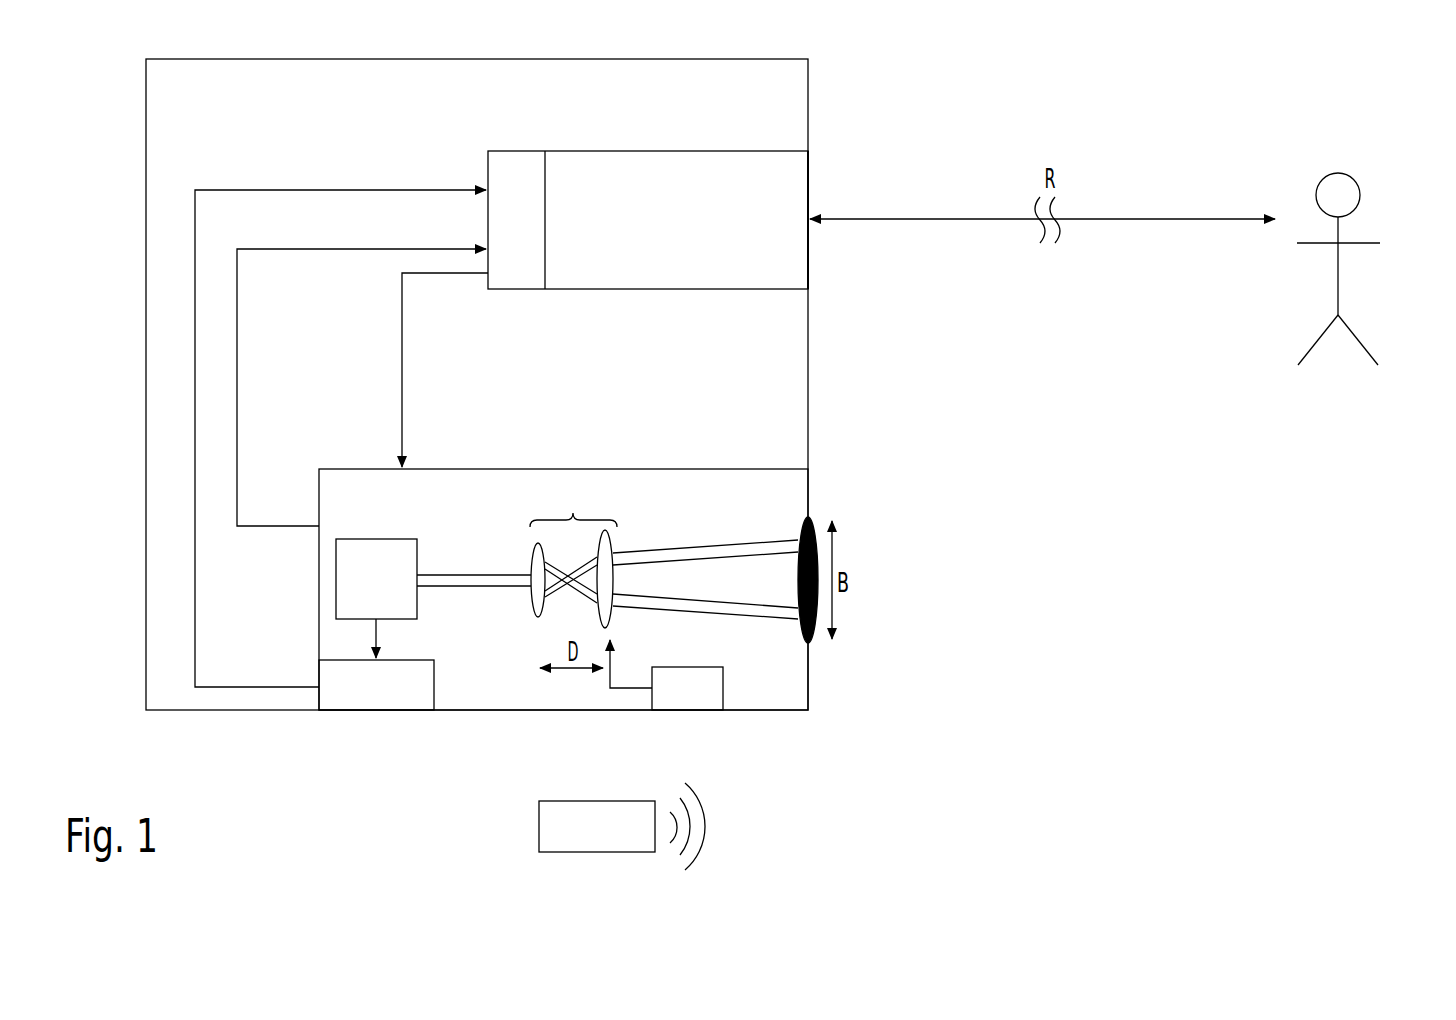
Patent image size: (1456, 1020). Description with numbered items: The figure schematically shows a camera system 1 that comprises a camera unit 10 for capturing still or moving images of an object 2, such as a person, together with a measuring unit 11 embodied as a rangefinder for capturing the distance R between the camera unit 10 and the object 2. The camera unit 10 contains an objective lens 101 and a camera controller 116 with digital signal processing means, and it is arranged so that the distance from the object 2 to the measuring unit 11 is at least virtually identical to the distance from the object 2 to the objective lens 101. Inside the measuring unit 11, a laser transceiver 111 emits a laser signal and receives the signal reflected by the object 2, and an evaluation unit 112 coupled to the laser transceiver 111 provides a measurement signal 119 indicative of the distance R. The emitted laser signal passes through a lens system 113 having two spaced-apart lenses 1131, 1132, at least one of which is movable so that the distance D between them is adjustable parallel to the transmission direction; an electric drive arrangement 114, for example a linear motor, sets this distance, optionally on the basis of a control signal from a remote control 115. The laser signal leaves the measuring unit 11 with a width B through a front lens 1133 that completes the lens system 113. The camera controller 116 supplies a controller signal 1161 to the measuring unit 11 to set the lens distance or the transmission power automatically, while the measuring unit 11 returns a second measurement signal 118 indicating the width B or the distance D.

The camera system 1 is at (124, 132).
The object 2 is at (1387, 166).
The camera unit 10 is at (665, 234).
The objective lens 101 is at (811, 175).
The measuring unit 11 is at (331, 444).
The laser transceiver 111 is at (358, 592).
The evaluation unit 112 is at (358, 700).
The lens system 113 is at (629, 554).
The first lens 1131 is at (532, 551).
The second lens 1132 is at (611, 542).
The front lens 1133 is at (813, 522).
The electric drive arrangement 114 is at (671, 703).
The remote control 115 is at (579, 840).
The camera controller 116 is at (520, 258).
The controller signal 1161 is at (403, 378).
The second measurement signal 118 is at (237, 493).
The measurement signal 119 is at (195, 652).